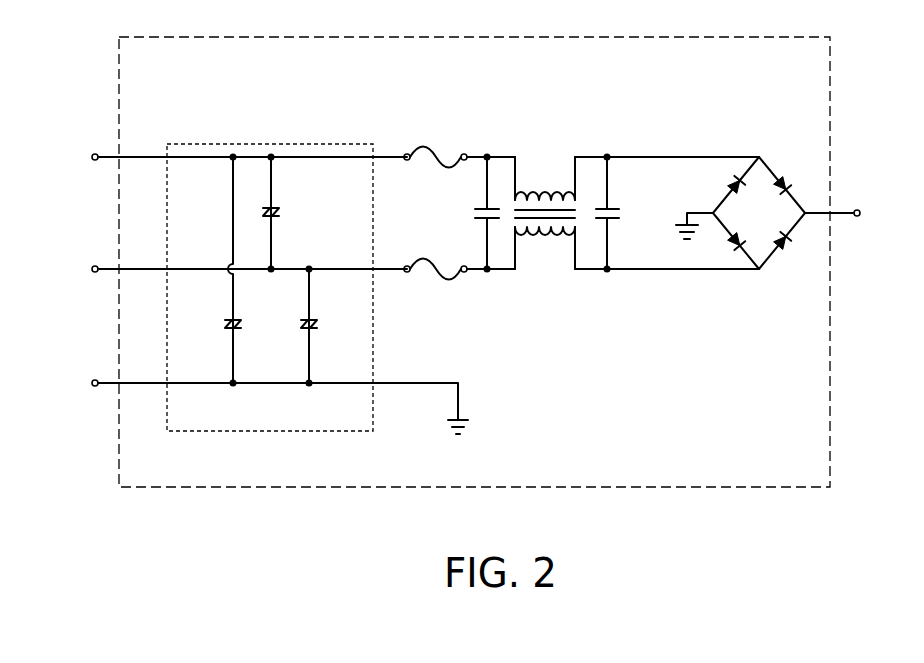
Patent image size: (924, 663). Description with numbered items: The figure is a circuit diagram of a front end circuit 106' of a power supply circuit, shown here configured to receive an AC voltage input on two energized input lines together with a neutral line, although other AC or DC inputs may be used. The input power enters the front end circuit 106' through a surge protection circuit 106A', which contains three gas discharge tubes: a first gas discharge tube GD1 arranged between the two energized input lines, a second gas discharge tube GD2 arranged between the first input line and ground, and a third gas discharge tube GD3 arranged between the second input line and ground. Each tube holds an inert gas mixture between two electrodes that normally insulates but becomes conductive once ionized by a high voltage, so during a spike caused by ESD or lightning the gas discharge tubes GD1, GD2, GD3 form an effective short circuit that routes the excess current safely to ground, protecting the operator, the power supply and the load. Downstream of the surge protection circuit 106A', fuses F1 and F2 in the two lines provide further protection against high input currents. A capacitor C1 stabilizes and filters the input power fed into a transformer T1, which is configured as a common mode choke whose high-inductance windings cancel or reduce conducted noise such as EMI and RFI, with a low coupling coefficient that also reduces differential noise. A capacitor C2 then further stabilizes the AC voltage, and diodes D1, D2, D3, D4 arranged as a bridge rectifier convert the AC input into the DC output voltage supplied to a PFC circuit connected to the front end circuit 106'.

The front end circuit 106' is at (462, 262).
The surge protection circuit 106A' is at (270, 287).
The first gas discharge tube GD1 is at (295, 213).
The second gas discharge tube GD2 is at (207, 270).
The third gas discharge tube GD3 is at (334, 326).
The fuse F1 is at (435, 142).
The fuse F2 is at (435, 285).
The capacitor C1 is at (470, 213).
The capacitor C2 is at (624, 213).
The transformer T1 is at (545, 213).
The diode D1 is at (721, 176).
The diode D2 is at (721, 251).
The diode D3 is at (798, 176).
The diode D4 is at (798, 250).